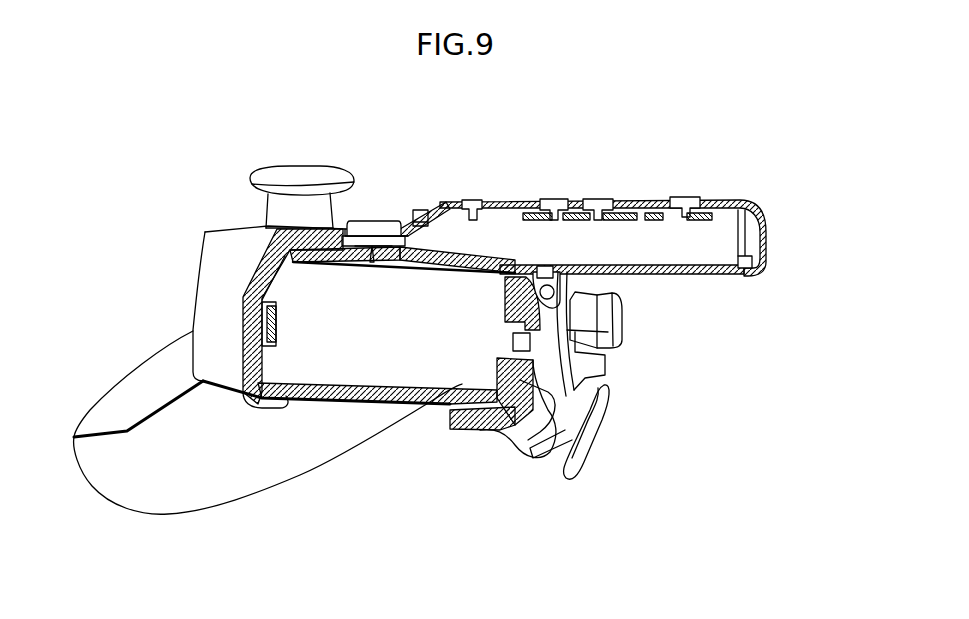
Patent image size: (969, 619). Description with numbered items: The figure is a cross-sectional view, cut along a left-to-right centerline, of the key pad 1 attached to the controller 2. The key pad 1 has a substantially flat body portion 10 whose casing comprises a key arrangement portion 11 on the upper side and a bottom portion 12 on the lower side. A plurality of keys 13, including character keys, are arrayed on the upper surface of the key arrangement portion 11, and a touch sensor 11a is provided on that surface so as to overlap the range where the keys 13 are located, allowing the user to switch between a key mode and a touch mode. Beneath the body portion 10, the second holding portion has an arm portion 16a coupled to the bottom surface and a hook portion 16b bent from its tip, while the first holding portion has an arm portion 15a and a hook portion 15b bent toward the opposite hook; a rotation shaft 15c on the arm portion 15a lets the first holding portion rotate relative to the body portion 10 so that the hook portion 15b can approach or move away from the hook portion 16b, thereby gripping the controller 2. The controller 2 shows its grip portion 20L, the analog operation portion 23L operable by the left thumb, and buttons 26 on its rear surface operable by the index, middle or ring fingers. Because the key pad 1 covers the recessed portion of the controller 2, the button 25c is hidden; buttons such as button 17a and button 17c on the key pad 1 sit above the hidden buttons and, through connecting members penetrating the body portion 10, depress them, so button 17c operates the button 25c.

The key pad 1 is at (640, 140).
The controller 2 is at (115, 338).
The body portion 10 is at (838, 198).
The key arrangement portion 11 is at (765, 226).
The bottom portion 12 is at (760, 270).
The keys 13 is at (473, 198).
The touch sensor 11a is at (532, 222).
The button 17a is at (421, 206).
The button 17c is at (368, 220).
The button 25c is at (374, 263).
The arm portion 16a is at (256, 262).
The hook portion 16b is at (258, 406).
The arm portion 15a is at (530, 428).
The hook portion 15b is at (462, 432).
The rotation shaft 15c is at (507, 295).
The buttons 26 is at (624, 322).
The grip portion 20L is at (174, 512).
The analog operation portion 23L is at (303, 166).